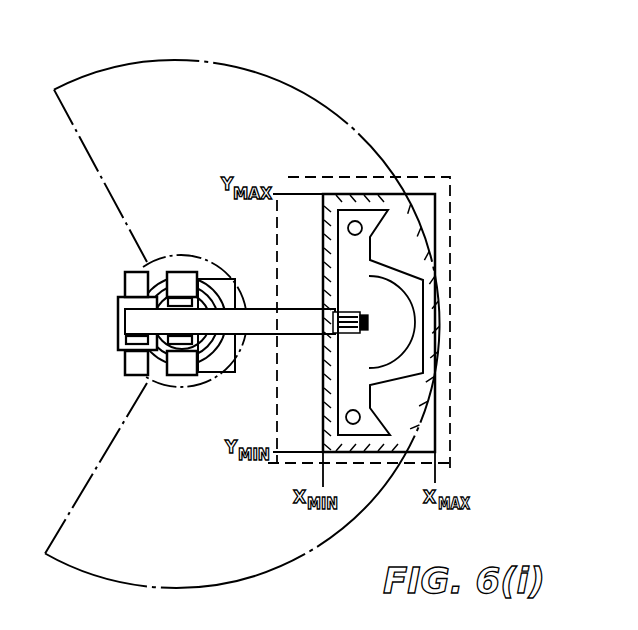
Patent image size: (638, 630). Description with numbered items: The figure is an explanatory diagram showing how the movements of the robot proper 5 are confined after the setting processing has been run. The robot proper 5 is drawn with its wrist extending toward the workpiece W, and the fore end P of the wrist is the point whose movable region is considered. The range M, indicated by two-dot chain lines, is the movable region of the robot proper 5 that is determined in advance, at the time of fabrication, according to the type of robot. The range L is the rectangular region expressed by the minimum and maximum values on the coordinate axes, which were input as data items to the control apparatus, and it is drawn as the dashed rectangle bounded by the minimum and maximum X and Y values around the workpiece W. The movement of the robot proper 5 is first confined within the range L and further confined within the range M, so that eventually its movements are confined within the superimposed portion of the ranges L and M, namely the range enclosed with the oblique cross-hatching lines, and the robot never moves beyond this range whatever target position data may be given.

The robot proper 5 is at (97, 321).
The movable region M is at (118, 185).
The workpiece W is at (348, 260).
The fore end of the wrist P is at (368, 319).
The range L is at (323, 382).